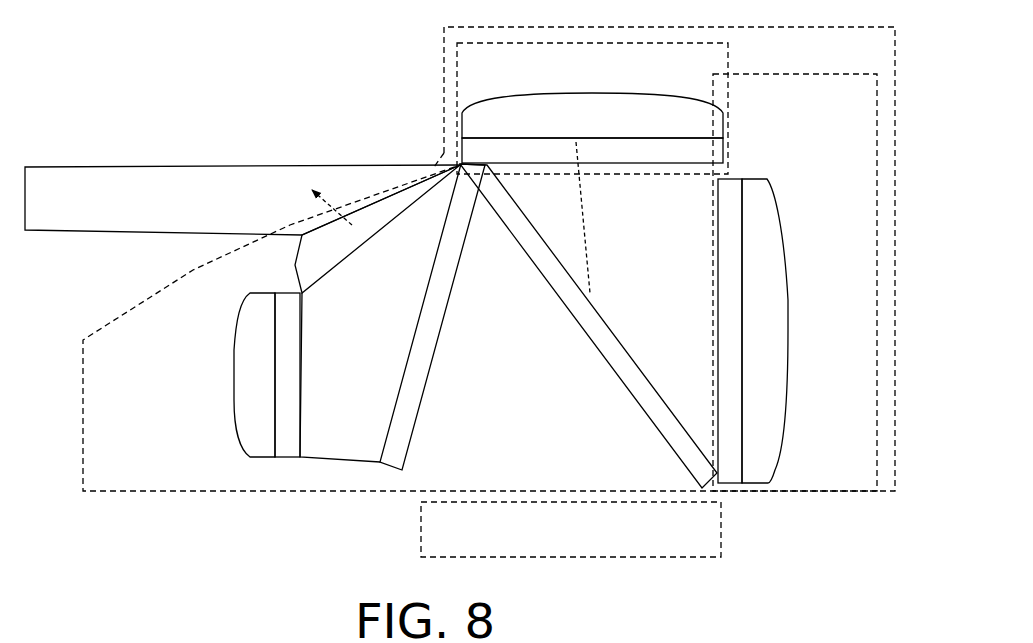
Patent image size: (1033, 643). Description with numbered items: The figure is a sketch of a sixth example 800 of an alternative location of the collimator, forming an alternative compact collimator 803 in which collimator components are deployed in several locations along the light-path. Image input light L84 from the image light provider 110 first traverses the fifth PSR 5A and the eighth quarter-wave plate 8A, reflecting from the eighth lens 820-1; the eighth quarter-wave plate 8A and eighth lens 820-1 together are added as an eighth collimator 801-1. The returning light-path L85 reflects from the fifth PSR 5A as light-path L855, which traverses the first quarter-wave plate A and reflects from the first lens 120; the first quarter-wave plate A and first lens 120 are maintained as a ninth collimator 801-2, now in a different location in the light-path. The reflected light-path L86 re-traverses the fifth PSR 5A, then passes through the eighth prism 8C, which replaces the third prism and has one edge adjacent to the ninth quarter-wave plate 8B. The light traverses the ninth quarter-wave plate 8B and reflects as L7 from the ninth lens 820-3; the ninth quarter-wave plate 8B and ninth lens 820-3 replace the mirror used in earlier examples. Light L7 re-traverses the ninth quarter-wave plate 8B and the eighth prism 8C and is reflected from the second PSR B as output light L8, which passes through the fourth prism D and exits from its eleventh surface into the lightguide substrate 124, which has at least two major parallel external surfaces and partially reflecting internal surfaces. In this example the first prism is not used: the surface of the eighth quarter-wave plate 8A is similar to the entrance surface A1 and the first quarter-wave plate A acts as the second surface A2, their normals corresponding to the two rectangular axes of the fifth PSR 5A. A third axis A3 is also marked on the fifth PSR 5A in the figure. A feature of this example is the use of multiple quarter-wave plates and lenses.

The sixth example 800 is at (282, 118).
The lightguide substrate (LOE) 124 is at (242, 200).
The fourth prism (PRISM-D) D is at (377, 229).
The eighth prism (PRISM-8C) 8C is at (340, 377).
The second PSR (PBS-B) B is at (432, 317).
The fifth PSR (PBS-5A) 5A is at (588, 326).
The eighth collimator 801-1 is at (592, 108).
The eighth lens 820-1 is at (592, 115).
The eighth quarter-wave plate (WAVE-8A) 8A is at (592, 150).
The ninth collimator 801-2 is at (795, 282).
The first quarter-wave plate (WAVE-A) A is at (730, 331).
The first lens 120 is at (765, 331).
The compact collimator 803 is at (200, 376).
The ninth lens 820-3 is at (254, 375).
The ninth quarter-wave plate (WAVE-8B) 8B is at (287, 375).
The image light provider 110 is at (571, 529).
The reflected light L7 is at (276, 338).
The output light L8 is at (427, 287).
The image input light L84 is at (568, 338).
The light-path L85 is at (567, 164).
The light-path L855 is at (788, 332).
The light-path L86 is at (788, 332).
The entrance surface A1 is at (615, 166).
The second surface A2 is at (717, 260).
The optical axis A3 is at (664, 402).